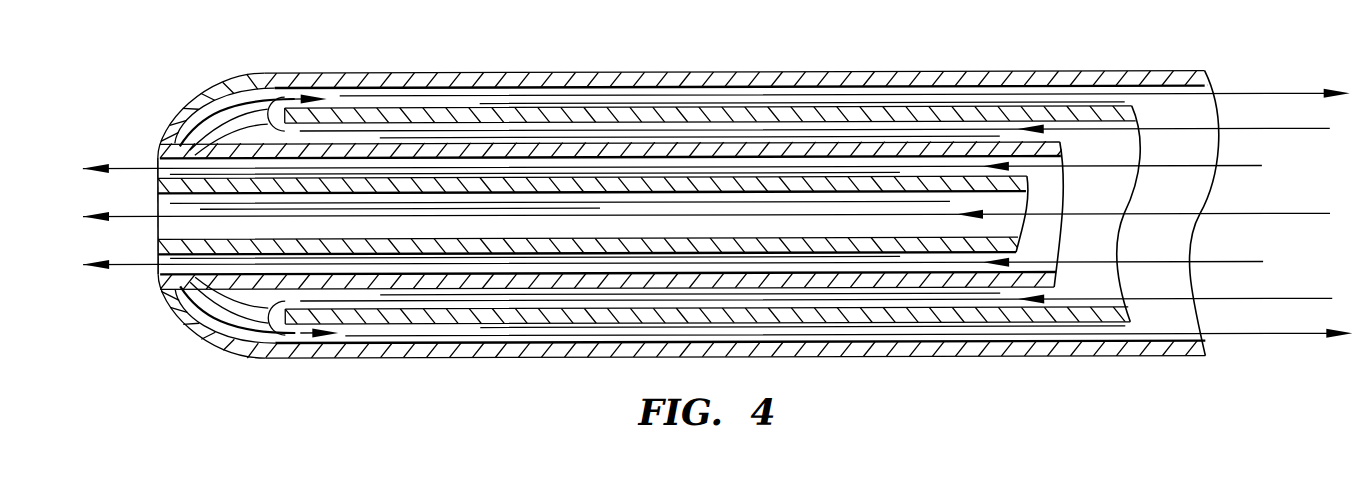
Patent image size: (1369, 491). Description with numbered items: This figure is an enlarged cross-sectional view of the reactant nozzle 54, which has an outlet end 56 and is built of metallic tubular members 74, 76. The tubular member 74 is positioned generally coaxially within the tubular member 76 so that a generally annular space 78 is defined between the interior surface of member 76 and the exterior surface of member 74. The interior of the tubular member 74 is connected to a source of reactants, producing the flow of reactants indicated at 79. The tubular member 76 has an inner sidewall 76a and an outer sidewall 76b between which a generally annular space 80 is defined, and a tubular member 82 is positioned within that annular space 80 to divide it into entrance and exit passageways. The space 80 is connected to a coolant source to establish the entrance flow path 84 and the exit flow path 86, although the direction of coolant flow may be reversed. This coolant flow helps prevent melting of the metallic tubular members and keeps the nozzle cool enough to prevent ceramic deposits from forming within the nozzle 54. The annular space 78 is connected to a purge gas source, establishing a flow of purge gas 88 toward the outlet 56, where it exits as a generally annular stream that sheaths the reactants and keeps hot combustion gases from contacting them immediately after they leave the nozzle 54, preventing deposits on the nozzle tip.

The reactant nozzle 54 is at (365, 58).
The outlet end 56 is at (157, 203).
The tubular member 74 is at (442, 198).
The tubular member 76 is at (580, 73).
The inner sidewall 76a is at (512, 150).
The outer sidewall 76b is at (711, 80).
The annular space 78 is at (158, 156).
The flow of reactants 79 is at (1316, 214).
The annular space 80 is at (242, 112).
The tubular member 82 is at (778, 110).
The entrance flow path 84 is at (1310, 133).
The exit flow path 86 is at (1292, 95).
The flow of purge gas 88 is at (1243, 168).